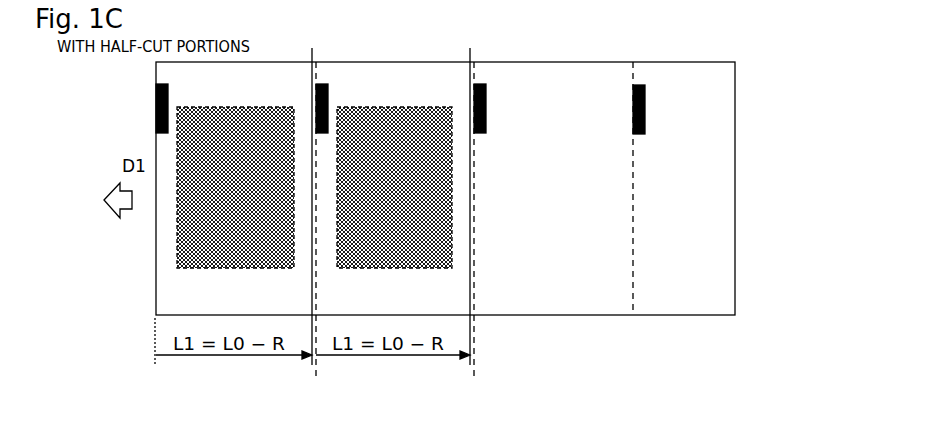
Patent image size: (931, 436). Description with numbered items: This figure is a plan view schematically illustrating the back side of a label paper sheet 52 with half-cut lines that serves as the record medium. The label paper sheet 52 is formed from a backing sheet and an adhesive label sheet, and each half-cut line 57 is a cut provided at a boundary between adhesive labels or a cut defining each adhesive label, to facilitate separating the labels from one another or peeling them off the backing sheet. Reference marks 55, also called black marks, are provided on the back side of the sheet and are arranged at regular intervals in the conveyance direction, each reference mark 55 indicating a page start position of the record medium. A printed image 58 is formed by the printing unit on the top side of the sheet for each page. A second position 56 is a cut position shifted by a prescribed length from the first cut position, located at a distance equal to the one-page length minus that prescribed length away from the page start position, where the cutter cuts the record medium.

The label paper sheet 52 is at (735, 188).
The reference mark 55 is at (156, 105).
The second position 56 is at (312, 362).
The half-cut line 57 is at (312, 64).
The printed image 58 is at (190, 230).